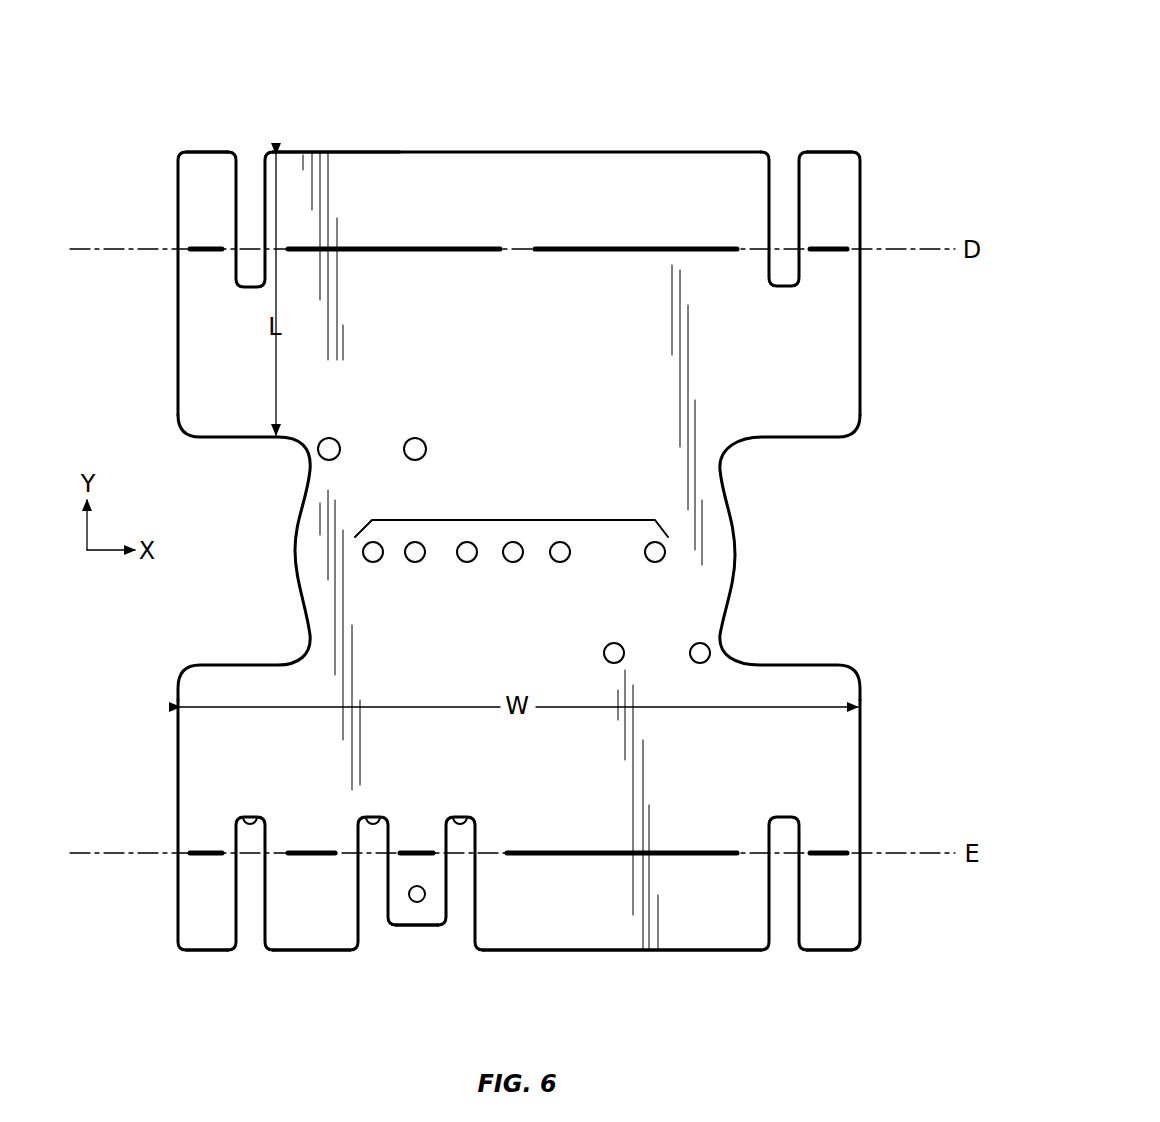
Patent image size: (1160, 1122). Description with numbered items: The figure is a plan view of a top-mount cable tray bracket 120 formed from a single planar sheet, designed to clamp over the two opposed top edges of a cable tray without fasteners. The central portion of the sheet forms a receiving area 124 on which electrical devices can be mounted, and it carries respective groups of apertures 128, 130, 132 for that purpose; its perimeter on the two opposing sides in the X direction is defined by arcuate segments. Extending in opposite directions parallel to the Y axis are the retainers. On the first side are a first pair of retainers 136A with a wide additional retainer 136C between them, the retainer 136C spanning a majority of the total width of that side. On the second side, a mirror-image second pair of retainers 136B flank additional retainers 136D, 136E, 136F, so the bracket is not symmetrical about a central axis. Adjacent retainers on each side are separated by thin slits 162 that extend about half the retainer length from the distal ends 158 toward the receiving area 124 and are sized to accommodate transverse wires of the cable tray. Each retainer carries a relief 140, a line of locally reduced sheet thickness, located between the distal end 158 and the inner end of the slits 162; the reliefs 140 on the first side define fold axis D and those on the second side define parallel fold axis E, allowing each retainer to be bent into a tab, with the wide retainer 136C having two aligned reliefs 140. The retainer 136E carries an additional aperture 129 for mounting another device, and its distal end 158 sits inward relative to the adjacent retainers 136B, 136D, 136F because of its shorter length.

The bracket 120 is at (514, 526).
The receiving area 124 is at (718, 513).
The apertures 128 is at (415, 460).
The additional aperture 129 is at (425, 890).
The apertures 130 is at (515, 520).
The apertures 132 is at (700, 643).
The first pair of retainers 136A is at (190, 200).
The second pair of retainers 136B is at (190, 912).
The additional retainer 136C is at (553, 168).
The additional retainer 136D is at (300, 940).
The additional retainer 136E is at (420, 940).
The additional retainer 136F is at (700, 937).
The relief 140 is at (208, 255).
The distal end 158 is at (198, 152).
The slits 162 is at (237, 175).